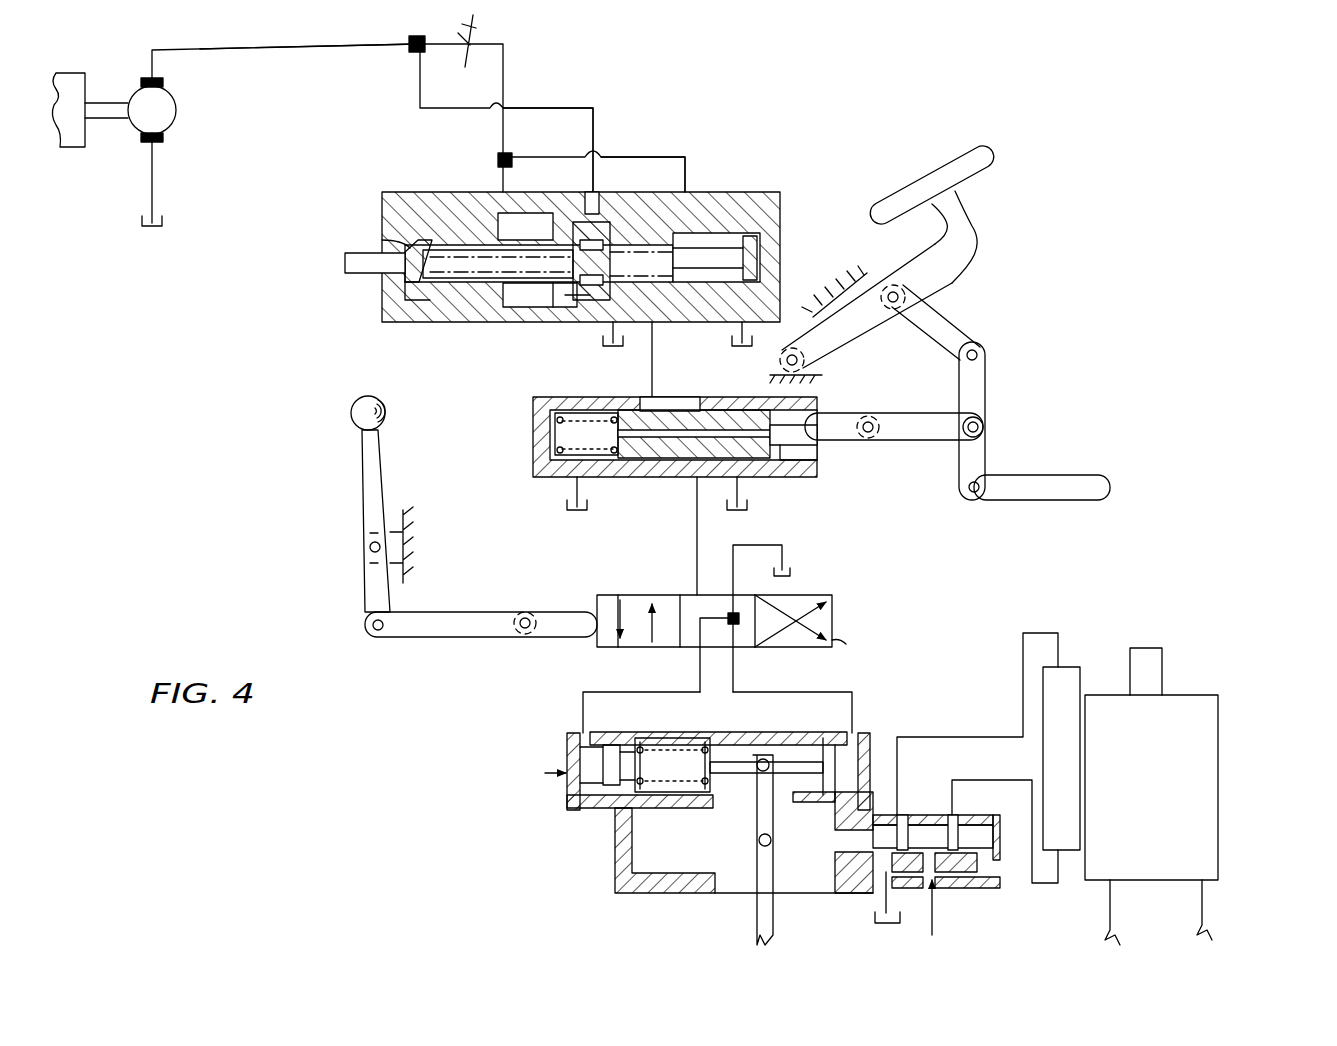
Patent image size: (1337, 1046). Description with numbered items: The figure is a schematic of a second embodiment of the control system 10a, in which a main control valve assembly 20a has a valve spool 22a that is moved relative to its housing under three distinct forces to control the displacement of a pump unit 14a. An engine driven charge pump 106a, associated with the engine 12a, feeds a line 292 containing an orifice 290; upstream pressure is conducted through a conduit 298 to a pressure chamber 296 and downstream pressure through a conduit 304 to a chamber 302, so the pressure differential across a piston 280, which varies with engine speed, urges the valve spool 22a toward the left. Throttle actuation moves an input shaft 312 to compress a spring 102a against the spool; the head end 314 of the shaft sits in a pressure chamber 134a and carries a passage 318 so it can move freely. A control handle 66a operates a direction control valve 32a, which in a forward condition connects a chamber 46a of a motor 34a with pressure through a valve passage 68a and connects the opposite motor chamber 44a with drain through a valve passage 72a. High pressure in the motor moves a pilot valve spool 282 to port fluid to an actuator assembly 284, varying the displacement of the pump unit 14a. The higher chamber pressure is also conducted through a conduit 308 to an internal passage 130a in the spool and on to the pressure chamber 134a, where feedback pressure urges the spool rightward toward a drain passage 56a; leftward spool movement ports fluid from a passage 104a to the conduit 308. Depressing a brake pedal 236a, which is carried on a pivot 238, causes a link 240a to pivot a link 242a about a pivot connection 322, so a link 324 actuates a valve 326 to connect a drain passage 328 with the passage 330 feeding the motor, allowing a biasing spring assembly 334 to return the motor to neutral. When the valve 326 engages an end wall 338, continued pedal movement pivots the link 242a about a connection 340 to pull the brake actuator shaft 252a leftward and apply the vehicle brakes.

The control system 10a is at (1242, 126).
The engine 12a is at (78, 138).
The charge pump 106a is at (170, 106).
The line 292 is at (307, 48).
The orifice 290 is at (501, 103).
The conduit 298 is at (566, 108).
The conduit 304 is at (496, 166).
The passage 104a is at (650, 157).
The main control valve assembly 20a is at (560, 223).
The chamber 302 is at (499, 212).
The spring 102a is at (539, 286).
The valve spool 22a is at (755, 245).
The internal passage 130a is at (621, 249).
The passage 318 is at (405, 278).
The head end 314 is at (382, 244).
The input shaft 312 is at (345, 263).
The pressure chamber 134a is at (410, 312).
The piston 280 is at (562, 305).
The drain passage 56a is at (615, 320).
The pressure chamber 296 is at (581, 204).
The conduit 308 is at (652, 378).
The valve 326 is at (690, 400).
The drain passage 328 is at (740, 492).
The passage 330 is at (697, 526).
The link 324 is at (928, 428).
The end wall 338 is at (828, 412).
The connection 340 is at (984, 425).
The link 242a is at (1013, 441).
The pivot connection 322 is at (980, 492).
The actuator shaft 252a is at (1110, 483).
The link 240a is at (950, 322).
The pivot 238 is at (861, 336).
The brake pedal 236a is at (922, 174).
The control handle 66a is at (364, 492).
The direction control valve 32a is at (795, 618).
The valve passage 72a is at (833, 604).
The valve passage 68a is at (867, 644).
The motor 34a is at (691, 818).
The biasing spring assembly 334 is at (698, 716).
The chamber 46a is at (868, 738).
The motor chamber 44a is at (580, 806).
The pilot valve spool 282 is at (954, 820).
The actuator assembly 284 is at (1086, 666).
The pump unit 14a is at (1218, 790).